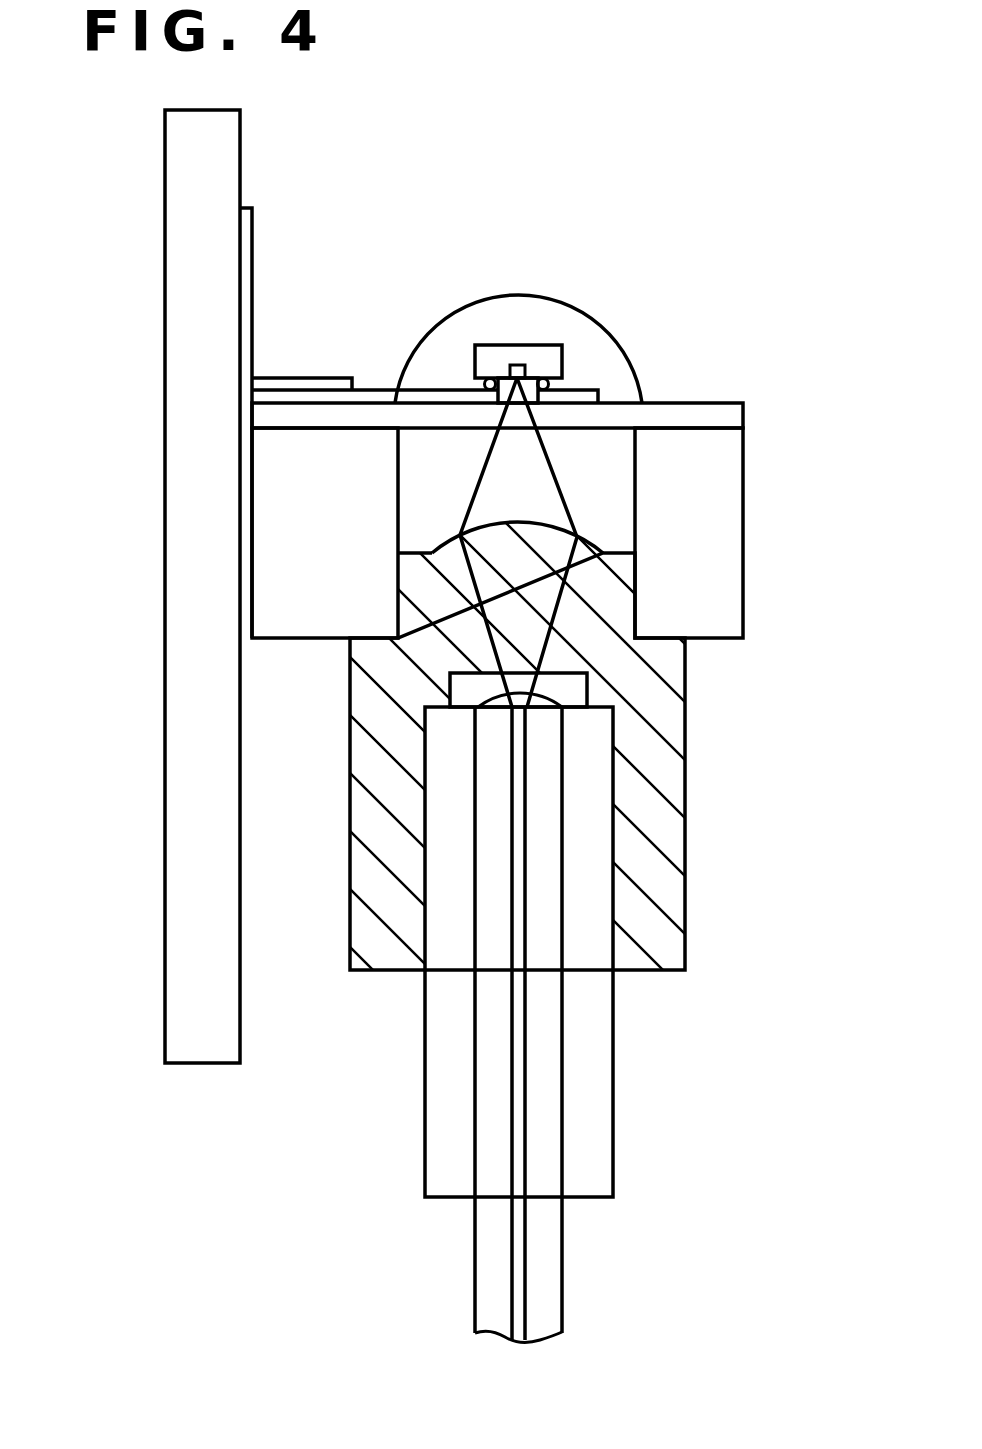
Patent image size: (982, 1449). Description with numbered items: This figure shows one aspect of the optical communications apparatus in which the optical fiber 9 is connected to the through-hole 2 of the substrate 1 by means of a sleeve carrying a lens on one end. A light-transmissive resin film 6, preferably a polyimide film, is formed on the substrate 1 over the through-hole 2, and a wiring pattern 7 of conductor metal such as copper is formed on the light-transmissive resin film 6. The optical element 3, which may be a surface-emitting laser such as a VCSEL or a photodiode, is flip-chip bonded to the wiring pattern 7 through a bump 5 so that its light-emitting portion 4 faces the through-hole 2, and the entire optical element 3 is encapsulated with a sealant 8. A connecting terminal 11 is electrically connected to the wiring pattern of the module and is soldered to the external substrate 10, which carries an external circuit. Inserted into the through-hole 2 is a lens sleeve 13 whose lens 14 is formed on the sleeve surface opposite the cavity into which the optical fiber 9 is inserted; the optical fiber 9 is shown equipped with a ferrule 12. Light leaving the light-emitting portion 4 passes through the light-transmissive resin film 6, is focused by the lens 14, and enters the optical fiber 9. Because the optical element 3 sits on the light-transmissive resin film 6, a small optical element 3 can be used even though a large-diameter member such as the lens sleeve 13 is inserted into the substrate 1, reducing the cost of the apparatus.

The substrate 1 is at (722, 597).
The through-hole 2 is at (637, 467).
The optical element 3 is at (500, 345).
The light-emitting portion 4 is at (523, 366).
The bump 5 is at (550, 383).
The light-transmissive resin film 6 is at (722, 417).
The wiring pattern 7 is at (265, 397).
The sealant 8 is at (597, 317).
The optical fiber 9 is at (490, 1088).
The external substrate 10 is at (203, 917).
The connecting terminal 11 is at (253, 250).
The ferrule 12 is at (452, 1022).
The lens sleeve 13 is at (675, 942).
The lens 14 is at (600, 532).